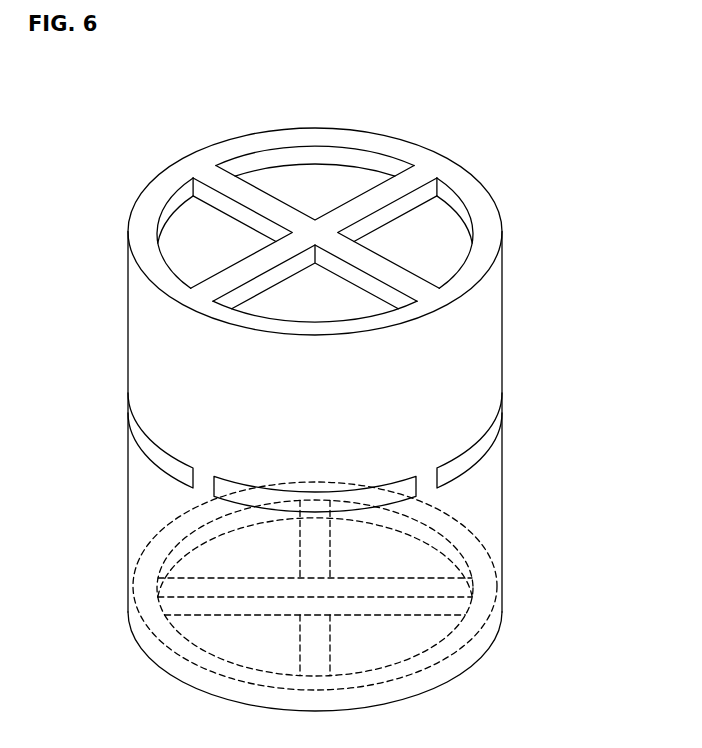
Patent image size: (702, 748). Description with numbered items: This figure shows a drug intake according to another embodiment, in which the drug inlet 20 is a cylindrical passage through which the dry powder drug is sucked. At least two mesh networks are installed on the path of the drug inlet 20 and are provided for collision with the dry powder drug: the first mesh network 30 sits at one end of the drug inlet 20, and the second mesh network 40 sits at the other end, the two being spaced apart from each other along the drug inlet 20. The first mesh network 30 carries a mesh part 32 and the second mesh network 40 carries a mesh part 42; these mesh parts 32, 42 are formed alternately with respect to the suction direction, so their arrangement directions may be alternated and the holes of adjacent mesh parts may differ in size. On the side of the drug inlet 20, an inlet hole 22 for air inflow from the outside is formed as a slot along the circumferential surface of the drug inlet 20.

The drug inlet 20 is at (110, 399).
The inlet hole 22 is at (205, 481).
The first mesh network 30 is at (477, 661).
The mesh part 32 is at (423, 582).
The second mesh network 40 is at (273, 137).
The mesh part 42 is at (376, 202).